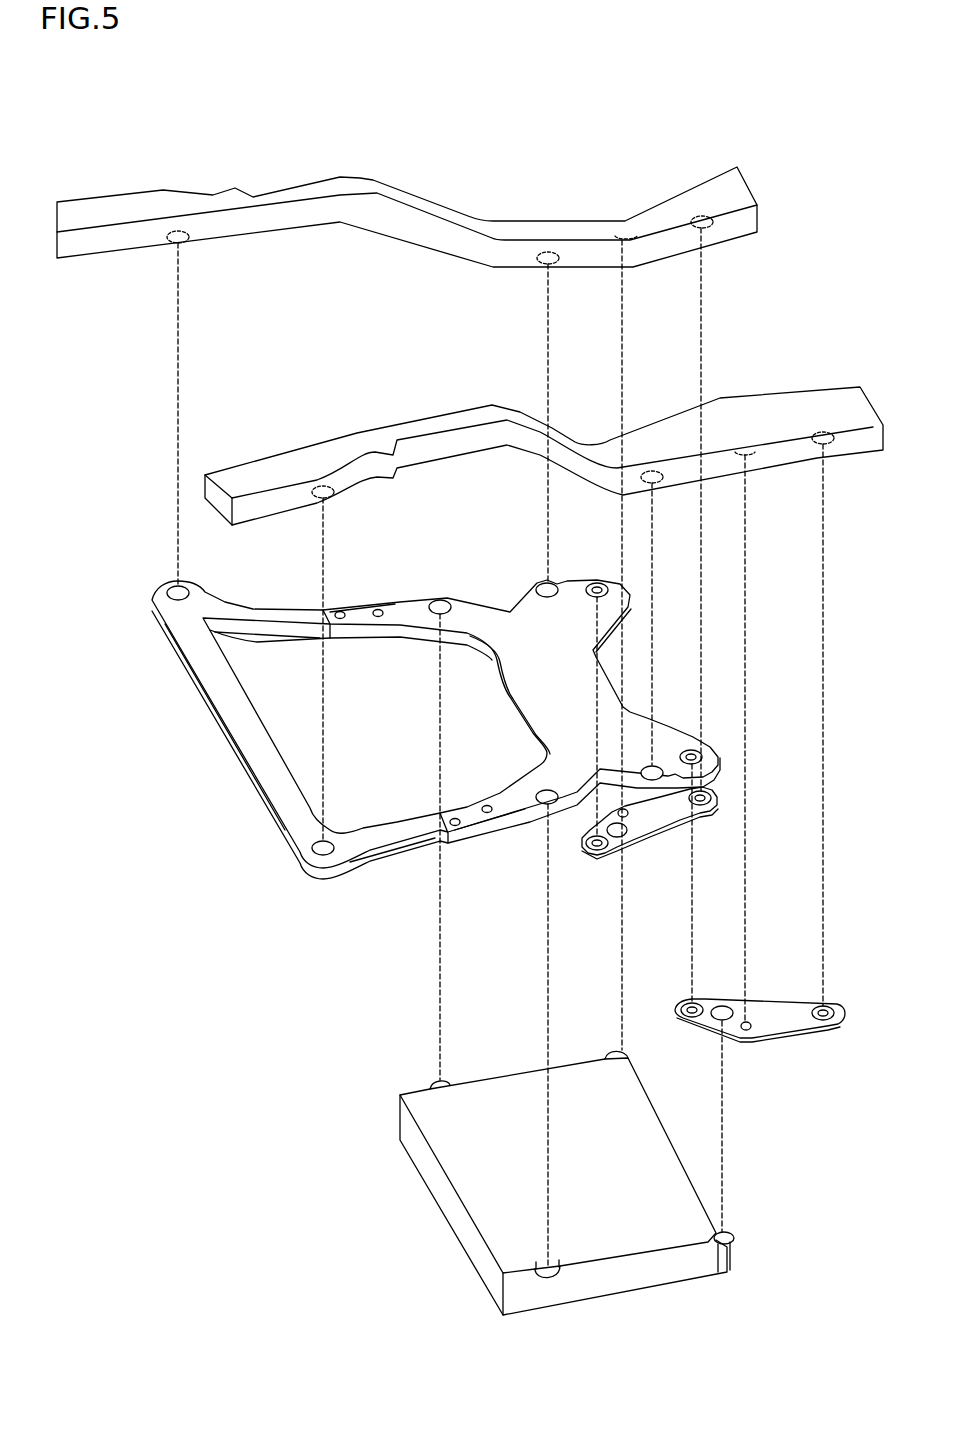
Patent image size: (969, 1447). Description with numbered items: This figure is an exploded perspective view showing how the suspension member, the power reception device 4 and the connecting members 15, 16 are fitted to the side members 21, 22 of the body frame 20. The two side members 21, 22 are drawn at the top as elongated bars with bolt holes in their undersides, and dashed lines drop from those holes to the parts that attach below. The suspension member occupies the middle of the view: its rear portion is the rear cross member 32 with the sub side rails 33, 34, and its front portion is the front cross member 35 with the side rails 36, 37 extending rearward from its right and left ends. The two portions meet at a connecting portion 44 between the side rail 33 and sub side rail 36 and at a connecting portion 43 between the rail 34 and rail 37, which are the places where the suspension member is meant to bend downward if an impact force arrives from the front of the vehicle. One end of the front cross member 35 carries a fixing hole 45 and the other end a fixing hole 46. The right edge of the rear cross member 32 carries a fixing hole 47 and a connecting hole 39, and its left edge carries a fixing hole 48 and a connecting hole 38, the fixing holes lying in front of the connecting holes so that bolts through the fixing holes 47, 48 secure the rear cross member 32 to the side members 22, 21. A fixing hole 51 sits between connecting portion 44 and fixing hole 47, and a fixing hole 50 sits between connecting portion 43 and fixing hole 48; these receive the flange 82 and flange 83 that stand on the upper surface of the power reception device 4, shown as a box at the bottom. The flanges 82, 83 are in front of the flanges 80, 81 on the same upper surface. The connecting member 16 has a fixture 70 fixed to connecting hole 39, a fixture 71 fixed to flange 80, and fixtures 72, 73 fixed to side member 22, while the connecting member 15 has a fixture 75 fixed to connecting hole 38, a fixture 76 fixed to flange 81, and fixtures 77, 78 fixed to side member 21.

The power reception device 4 is at (512, 1090).
The connecting member 15 is at (777, 1003).
The connecting member 16 is at (672, 817).
The body frame 20 is at (470, 324).
The side member 21 is at (363, 445).
The side member 22 is at (307, 192).
The rear cross member 32 is at (507, 703).
The sub side rail 33 is at (385, 632).
The sub side rail 34 is at (508, 826).
The front cross member 35 is at (217, 725).
The side rail 36 is at (288, 638).
The side rail 37 is at (408, 852).
The connecting hole 38 is at (690, 750).
The connecting hole 39 is at (599, 582).
The connecting portion 43 is at (455, 830).
The connecting portion 44 is at (333, 632).
The fixing hole 45 is at (165, 592).
The fixing hole 46 is at (311, 847).
The fixing hole 47 is at (536, 583).
The fixing hole 48 is at (644, 768).
The fixing hole 50 is at (543, 790).
The fixing hole 51 is at (440, 599).
The fixture 70 is at (597, 851).
The fixture 71 is at (627, 836).
The fixture 72 is at (618, 810).
The fixture 73 is at (705, 806).
The fixture 75 is at (690, 1019).
The fixture 76 is at (722, 1005).
The fixture 77 is at (746, 1032).
The fixture 78 is at (823, 1021).
The flange 80 is at (612, 1053).
The flange 81 is at (722, 1280).
The flange 82 is at (430, 1085).
The flange 83 is at (550, 1283).